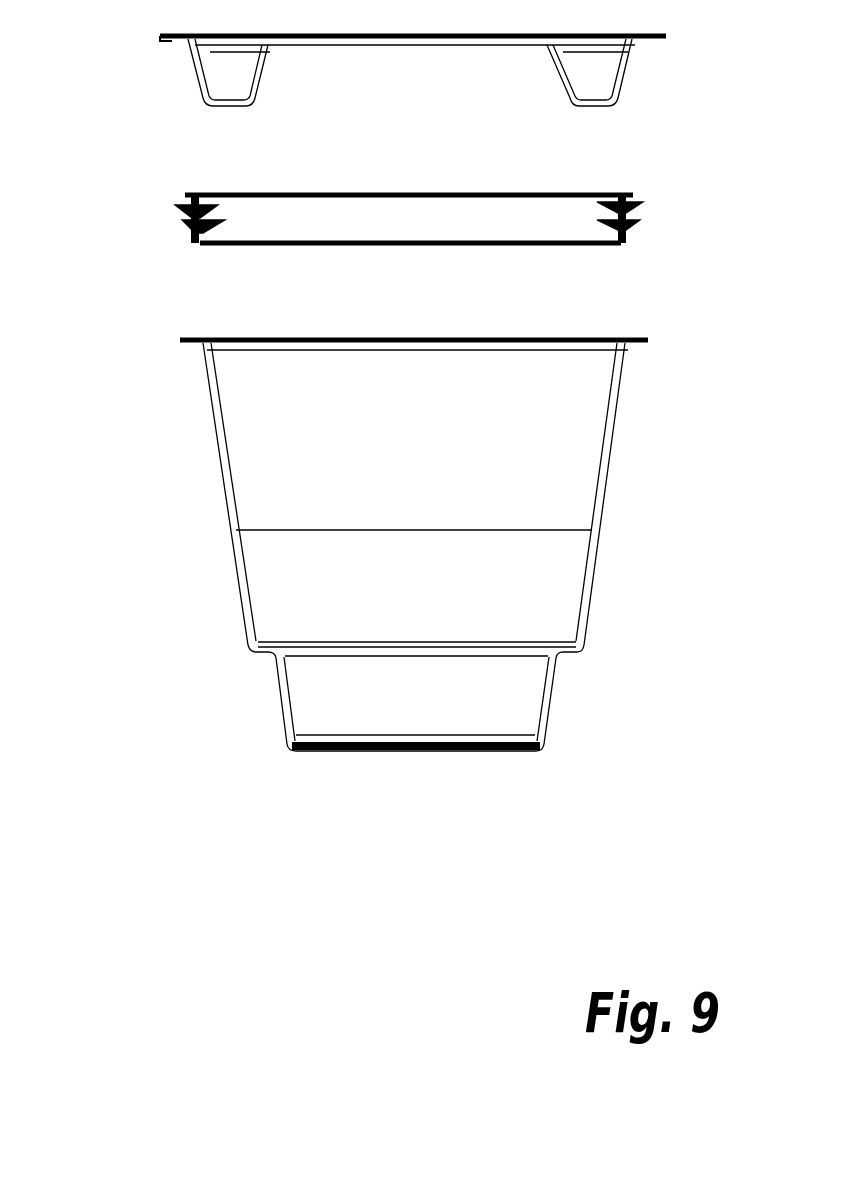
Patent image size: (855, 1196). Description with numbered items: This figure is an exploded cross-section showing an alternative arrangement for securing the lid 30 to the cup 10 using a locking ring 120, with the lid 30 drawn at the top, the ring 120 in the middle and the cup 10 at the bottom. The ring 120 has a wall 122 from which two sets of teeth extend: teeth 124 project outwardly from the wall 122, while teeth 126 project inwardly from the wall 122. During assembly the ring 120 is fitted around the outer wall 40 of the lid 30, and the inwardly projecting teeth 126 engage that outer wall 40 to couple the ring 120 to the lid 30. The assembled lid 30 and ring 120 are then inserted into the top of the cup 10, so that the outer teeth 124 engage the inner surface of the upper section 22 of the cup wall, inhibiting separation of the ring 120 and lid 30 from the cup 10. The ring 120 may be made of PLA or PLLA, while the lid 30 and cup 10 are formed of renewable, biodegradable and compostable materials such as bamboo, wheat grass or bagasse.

The cup 10 is at (361, 546).
The upper section of the wall of the cup 22 is at (218, 408).
The lid 30 is at (386, 105).
The outer wall of the lid 40 is at (627, 70).
The ring 120 is at (390, 242).
The wall 122 is at (409, 219).
The teeth 124 is at (178, 222).
The teeth 126 is at (227, 220).